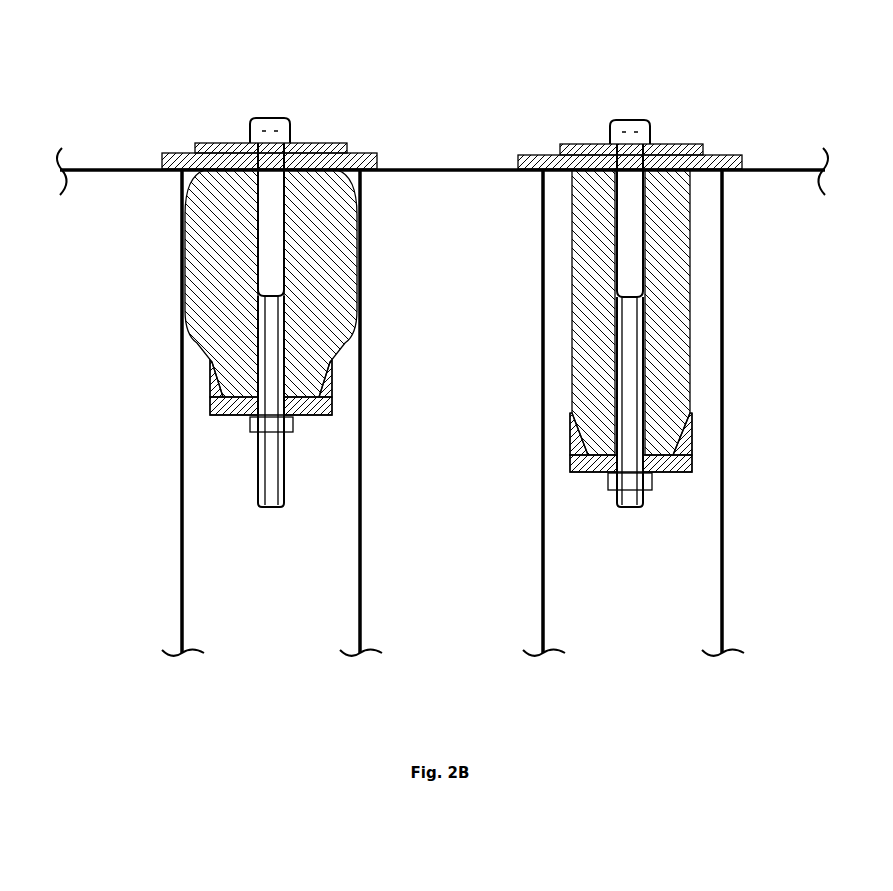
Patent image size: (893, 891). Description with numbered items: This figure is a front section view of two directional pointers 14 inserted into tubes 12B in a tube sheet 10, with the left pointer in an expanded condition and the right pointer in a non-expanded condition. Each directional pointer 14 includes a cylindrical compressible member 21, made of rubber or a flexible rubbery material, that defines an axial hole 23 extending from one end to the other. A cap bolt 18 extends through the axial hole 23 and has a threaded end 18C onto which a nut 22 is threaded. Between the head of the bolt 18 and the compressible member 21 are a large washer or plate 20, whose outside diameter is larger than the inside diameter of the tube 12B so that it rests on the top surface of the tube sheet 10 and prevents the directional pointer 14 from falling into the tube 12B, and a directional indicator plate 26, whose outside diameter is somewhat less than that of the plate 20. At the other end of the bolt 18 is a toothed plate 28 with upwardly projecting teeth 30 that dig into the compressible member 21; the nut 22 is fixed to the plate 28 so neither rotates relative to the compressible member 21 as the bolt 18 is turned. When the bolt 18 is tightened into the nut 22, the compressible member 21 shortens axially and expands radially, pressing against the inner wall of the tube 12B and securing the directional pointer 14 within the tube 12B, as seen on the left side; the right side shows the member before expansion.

The tube sheet 10 is at (127, 168).
The tube 12B is at (182, 548).
The directional pointer 14 is at (376, 100).
The cap bolt 18 is at (292, 130).
The threaded end 18C is at (256, 482).
The plate 20 is at (377, 160).
The compressible cylindrical member 21 is at (362, 253).
The nut 22 is at (290, 428).
The axial hole 23 is at (255, 240).
The directional indicator plate 26 is at (232, 143).
The toothed plate 28 is at (232, 415).
The teeth 30 is at (210, 380).